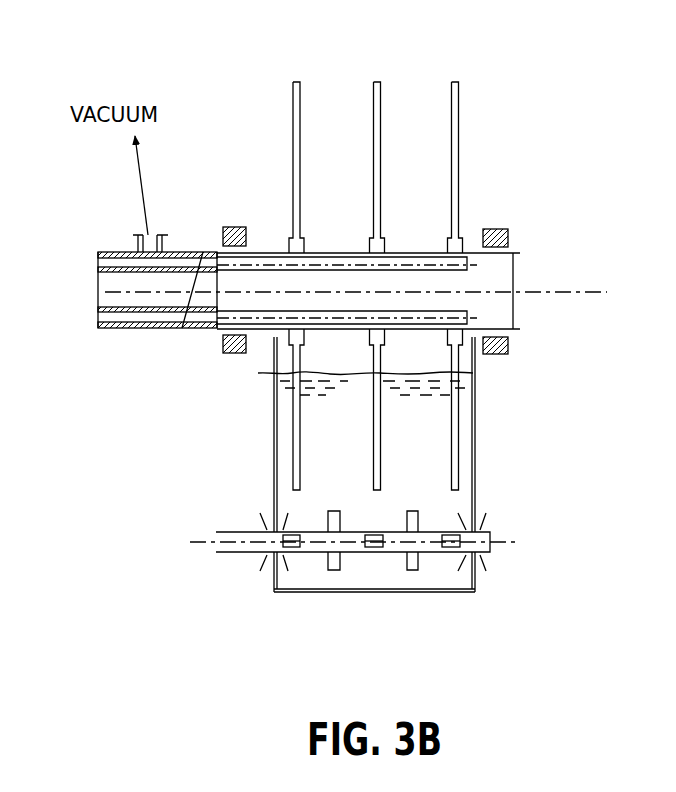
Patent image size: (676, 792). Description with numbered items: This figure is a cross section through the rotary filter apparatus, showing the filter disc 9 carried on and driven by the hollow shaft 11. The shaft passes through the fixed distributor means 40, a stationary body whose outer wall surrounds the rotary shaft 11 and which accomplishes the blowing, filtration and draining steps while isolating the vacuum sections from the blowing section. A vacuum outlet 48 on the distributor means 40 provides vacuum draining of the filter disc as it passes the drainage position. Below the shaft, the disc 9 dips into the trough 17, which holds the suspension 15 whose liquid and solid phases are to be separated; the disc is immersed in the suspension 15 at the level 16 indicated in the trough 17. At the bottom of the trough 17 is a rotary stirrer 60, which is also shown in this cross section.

The disc 9 is at (459, 100).
The hollow shaft 11 is at (98, 292).
The suspension 15 is at (473, 429).
The level 16 is at (258, 373).
The trough 17 is at (473, 492).
The fixed distributor means 40 is at (116, 334).
The vacuum outlet 48 is at (133, 235).
The rotary stirrer 60 is at (225, 552).